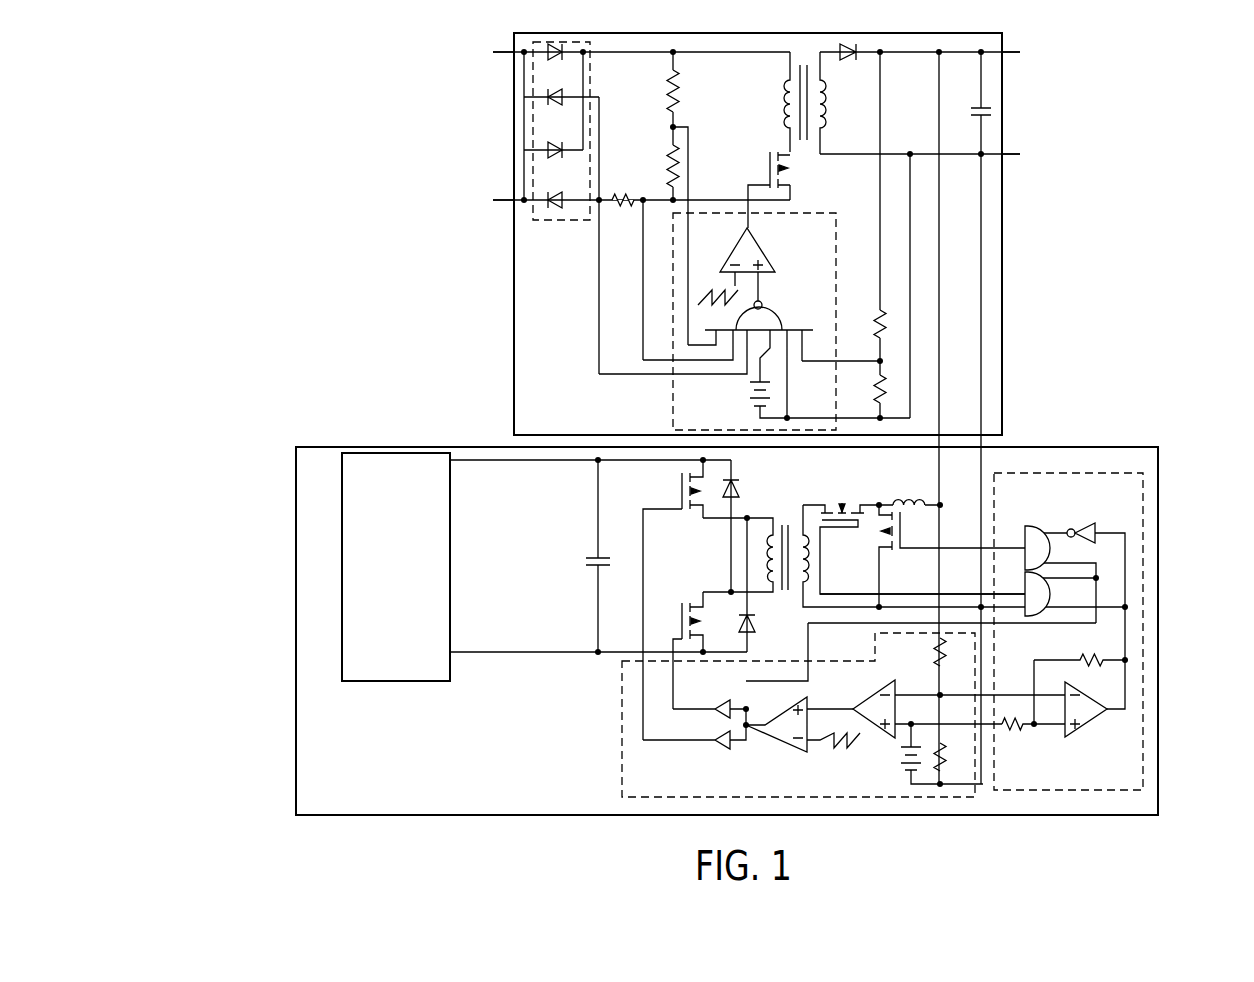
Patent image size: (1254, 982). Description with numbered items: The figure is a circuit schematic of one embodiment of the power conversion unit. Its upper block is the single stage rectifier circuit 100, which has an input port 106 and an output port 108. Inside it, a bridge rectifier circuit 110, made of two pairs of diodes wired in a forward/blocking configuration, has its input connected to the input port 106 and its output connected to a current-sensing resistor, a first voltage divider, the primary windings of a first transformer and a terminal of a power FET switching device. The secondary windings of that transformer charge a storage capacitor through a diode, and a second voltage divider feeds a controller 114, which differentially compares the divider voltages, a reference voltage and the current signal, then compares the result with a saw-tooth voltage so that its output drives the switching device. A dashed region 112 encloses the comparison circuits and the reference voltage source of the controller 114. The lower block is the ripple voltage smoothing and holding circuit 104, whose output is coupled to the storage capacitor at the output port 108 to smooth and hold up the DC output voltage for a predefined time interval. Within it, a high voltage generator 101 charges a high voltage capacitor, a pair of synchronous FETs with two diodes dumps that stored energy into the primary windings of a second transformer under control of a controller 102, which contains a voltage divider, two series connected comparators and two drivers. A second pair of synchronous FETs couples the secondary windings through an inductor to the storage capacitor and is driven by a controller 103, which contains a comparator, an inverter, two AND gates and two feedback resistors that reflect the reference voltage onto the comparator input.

The single stage rectifier circuit 100 is at (488, 326).
The high voltage generator 101 is at (393, 683).
The controller 102 is at (662, 690).
The controller 103 is at (1146, 520).
The ripple voltage smoothing and holding circuit 104 is at (278, 710).
The input port 106 is at (430, 141).
The output port 108 is at (588, 590).
The bridge rectifier circuit 110 is at (553, 221).
The pulse width modulation controller 112 is at (673, 410).
The controller 114 is at (842, 232).